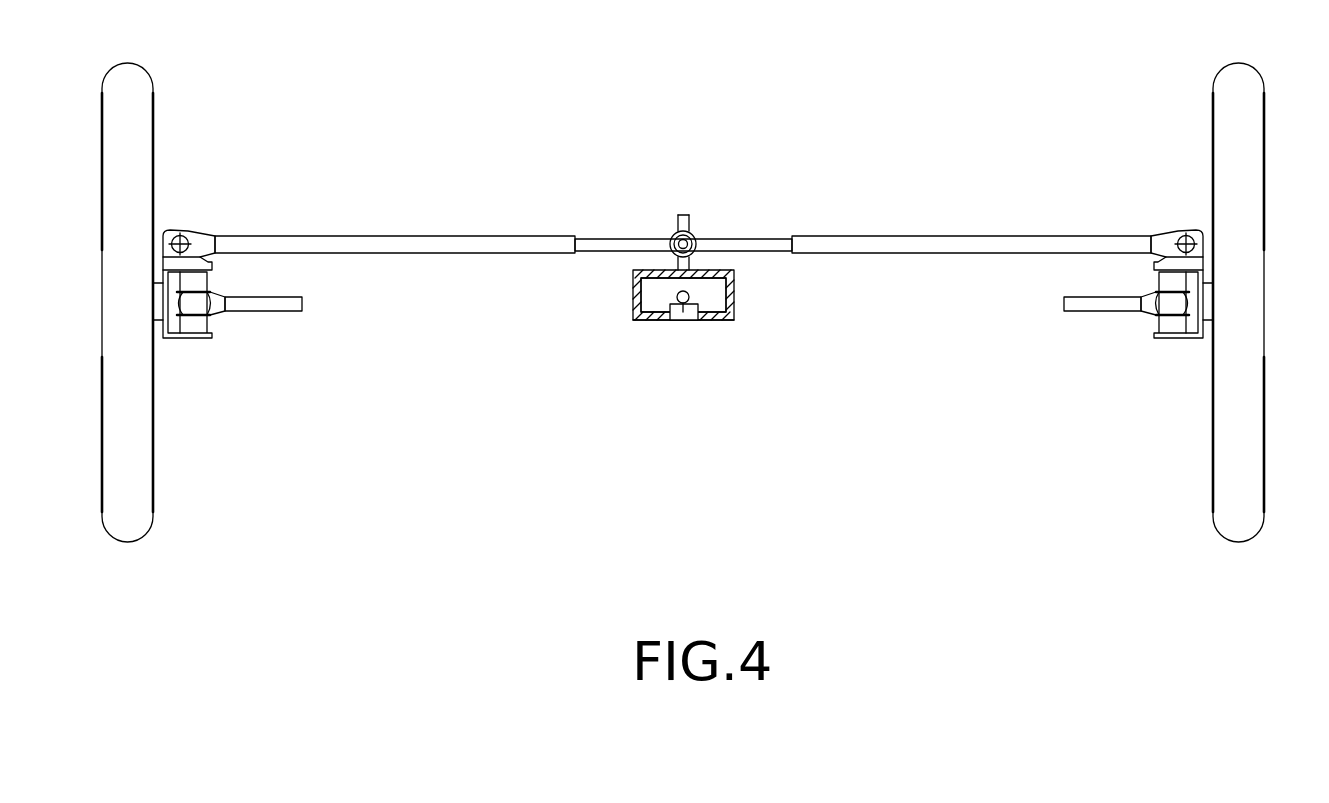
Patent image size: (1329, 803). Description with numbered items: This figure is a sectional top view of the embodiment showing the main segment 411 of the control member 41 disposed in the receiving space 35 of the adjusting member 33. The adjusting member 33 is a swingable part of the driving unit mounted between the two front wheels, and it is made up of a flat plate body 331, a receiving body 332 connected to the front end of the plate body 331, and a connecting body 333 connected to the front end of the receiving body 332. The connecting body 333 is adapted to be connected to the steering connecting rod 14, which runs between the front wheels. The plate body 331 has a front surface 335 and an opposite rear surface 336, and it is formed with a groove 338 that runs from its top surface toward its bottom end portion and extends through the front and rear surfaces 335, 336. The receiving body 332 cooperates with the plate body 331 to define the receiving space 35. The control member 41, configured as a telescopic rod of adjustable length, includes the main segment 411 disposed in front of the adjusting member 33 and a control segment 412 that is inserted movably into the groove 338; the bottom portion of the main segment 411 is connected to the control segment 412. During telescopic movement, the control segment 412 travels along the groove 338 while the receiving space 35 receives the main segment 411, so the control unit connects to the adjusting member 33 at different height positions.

The steering connecting rod 14 is at (971, 237).
The adjusting member 33 is at (700, 260).
The plate body 331 is at (636, 324).
The receiving body 332 is at (634, 297).
The connecting body 333 is at (690, 225).
The front surface 335 is at (653, 312).
The rear surface 336 is at (718, 322).
The groove 338 is at (685, 321).
The receiving space 35 is at (712, 295).
The control member 41 is at (604, 194).
The main segment 411 is at (676, 296).
The control segment 412 is at (678, 310).